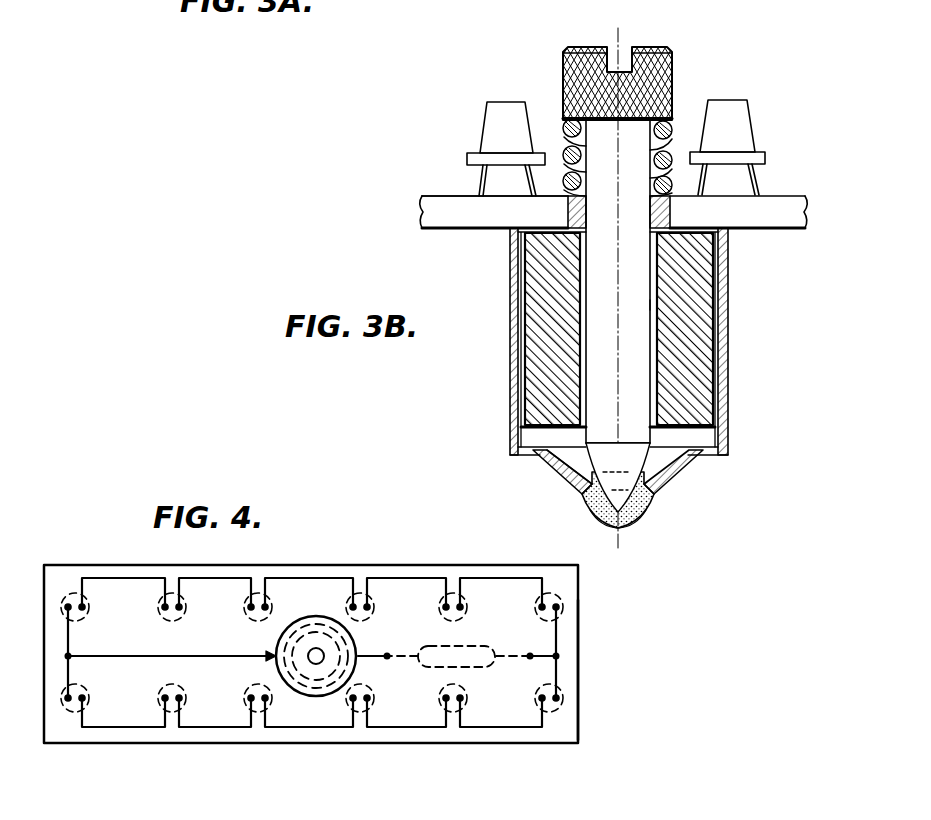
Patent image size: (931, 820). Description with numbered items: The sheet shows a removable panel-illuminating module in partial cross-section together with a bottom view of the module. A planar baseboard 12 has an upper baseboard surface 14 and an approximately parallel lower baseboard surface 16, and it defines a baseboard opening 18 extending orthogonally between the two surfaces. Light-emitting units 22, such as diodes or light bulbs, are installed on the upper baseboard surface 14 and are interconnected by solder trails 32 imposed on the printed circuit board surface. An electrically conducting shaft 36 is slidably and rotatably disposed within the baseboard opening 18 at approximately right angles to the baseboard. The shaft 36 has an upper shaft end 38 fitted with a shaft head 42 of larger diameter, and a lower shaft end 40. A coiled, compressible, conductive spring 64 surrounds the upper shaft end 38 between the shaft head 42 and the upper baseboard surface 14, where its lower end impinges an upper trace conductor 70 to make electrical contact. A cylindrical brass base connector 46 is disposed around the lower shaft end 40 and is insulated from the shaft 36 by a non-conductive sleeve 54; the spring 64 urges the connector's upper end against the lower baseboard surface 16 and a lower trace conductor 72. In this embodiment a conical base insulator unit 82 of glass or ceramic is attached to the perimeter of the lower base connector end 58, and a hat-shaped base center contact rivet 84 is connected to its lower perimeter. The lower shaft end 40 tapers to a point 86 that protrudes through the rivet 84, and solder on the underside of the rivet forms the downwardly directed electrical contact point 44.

In FIG. 3B, the planar baseboard 12 is at (422, 210).
In FIG. 4, the planar baseboard 12 is at (340, 550).
In FIG. 3B, the upper baseboard surface 14 is at (450, 196).
In FIG. 3B, the lower baseboard surface 16 is at (783, 230).
In FIG. 4, the lower baseboard surface 16 is at (572, 677).
In FIG. 3B, the baseboard opening 18 is at (652, 214).
In FIG. 3B, the light-emitting units 22 is at (482, 116).
In FIG. 4, the solder trails 32 is at (128, 729).
In FIG. 3B, the shaft 36 is at (645, 305).
In FIG. 3B, the upper shaft end 38 is at (598, 126).
In FIG. 3B, the lower shaft end 40 is at (596, 433).
In FIG. 3B, the shaft head 42 is at (649, 47).
In FIG. 3B, the electrical contact point 44 is at (637, 525).
In FIG. 3B, the cylindrical base connector 46 is at (727, 355).
In FIG. 3B, the sleeve 54 is at (704, 388).
In FIG. 3B, the lower base connector end 58 is at (730, 428).
In FIG. 3B, the spring 64 is at (674, 130).
In FIG. 4, the upper trace conductor 70 is at (286, 685).
In FIG. 4, the lower trace conductor 72 is at (327, 697).
In FIG. 3B, the conical base insulator unit 82 is at (687, 475).
In FIG. 3B, the base center contact rivet 84 is at (577, 472).
In FIG. 3B, the point 86 is at (650, 507).